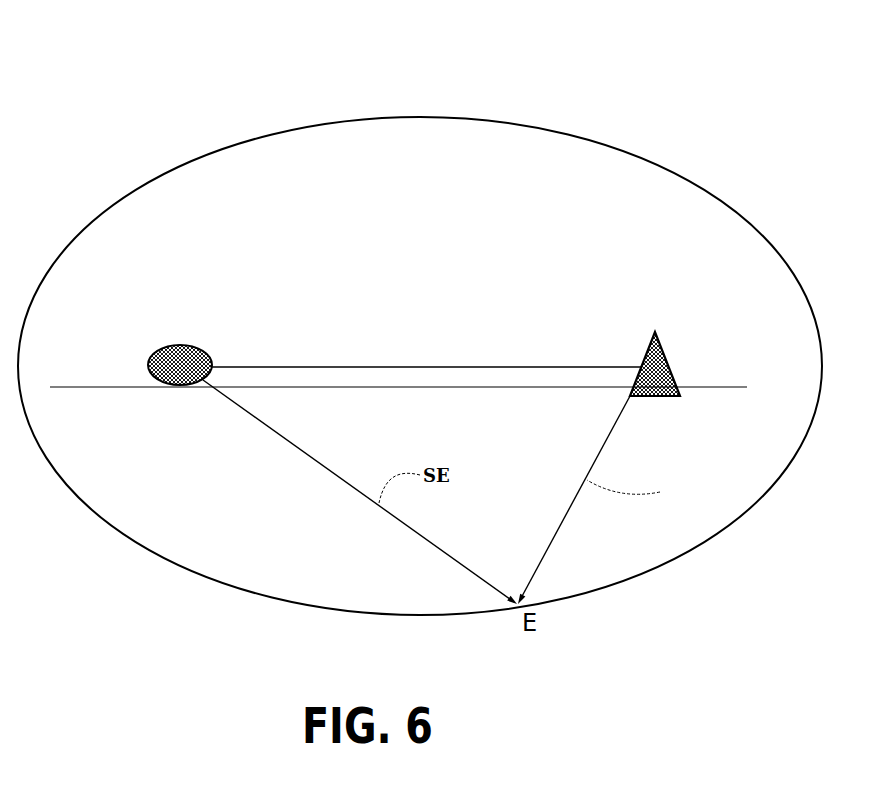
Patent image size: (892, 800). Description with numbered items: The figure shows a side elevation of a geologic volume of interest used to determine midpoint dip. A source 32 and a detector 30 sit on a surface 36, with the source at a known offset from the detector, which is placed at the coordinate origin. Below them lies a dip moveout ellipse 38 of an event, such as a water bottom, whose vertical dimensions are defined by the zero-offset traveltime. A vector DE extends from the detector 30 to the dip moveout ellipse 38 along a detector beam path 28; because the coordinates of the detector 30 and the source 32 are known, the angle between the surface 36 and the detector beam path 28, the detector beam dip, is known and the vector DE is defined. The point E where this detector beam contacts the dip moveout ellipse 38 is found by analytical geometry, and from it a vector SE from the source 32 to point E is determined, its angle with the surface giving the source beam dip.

The dip moveout ellipse 38 is at (458, 114).
The surface 36 is at (715, 388).
The source 32 is at (200, 350).
The detector 30 is at (640, 350).
The detector beam path 28 is at (555, 540).